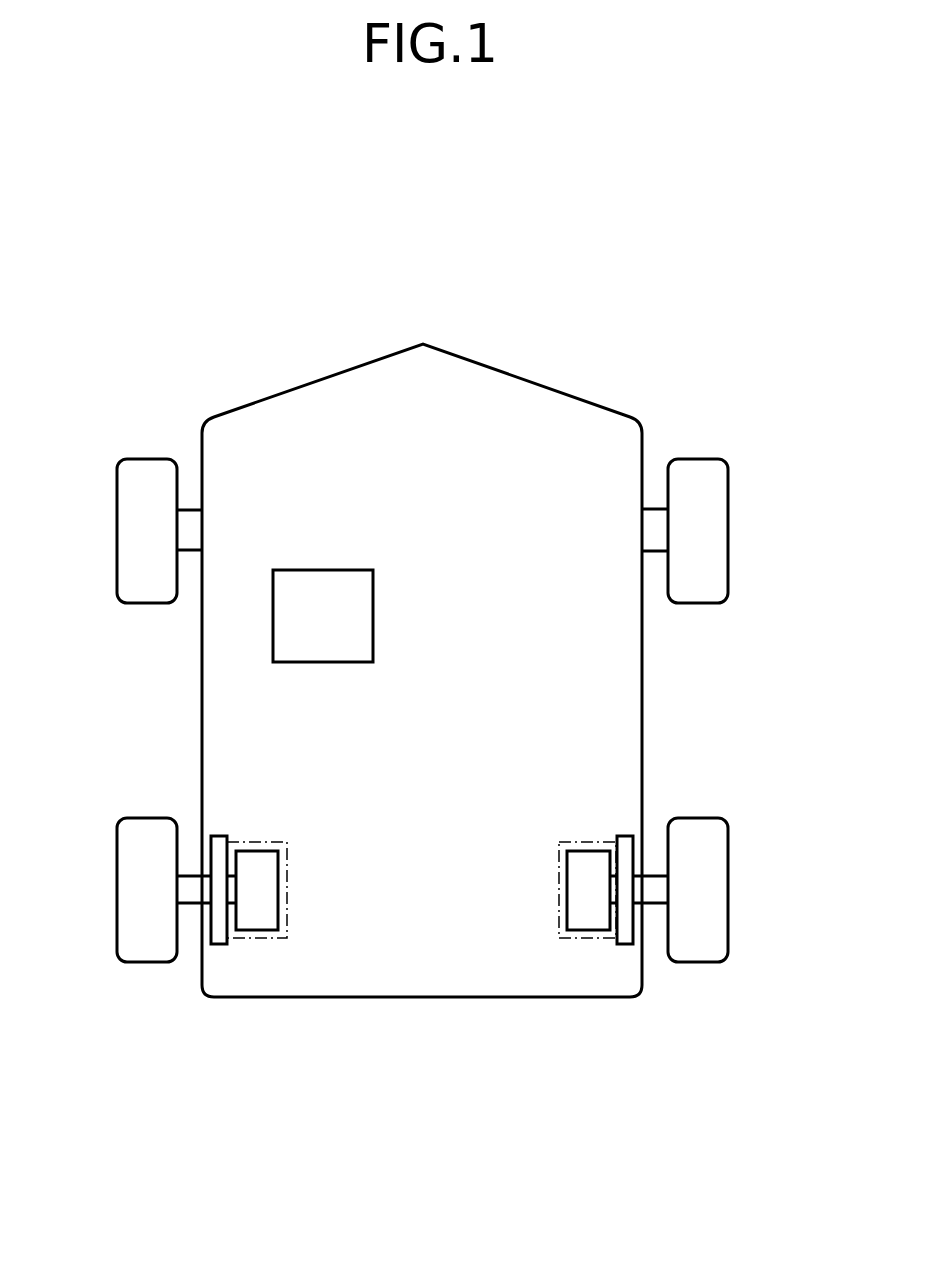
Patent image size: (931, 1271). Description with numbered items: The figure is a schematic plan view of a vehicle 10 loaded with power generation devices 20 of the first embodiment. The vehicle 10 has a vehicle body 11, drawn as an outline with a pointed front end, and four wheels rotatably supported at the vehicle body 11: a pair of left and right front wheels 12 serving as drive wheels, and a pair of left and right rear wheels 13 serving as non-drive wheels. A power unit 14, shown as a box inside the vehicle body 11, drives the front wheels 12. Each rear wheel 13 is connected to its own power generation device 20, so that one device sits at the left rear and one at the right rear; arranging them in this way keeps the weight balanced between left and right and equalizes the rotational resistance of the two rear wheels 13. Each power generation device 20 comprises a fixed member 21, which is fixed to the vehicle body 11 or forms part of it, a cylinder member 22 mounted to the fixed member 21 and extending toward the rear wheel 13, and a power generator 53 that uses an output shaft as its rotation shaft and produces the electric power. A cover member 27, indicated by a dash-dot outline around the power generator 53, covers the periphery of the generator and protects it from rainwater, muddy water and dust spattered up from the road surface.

The vehicle 10 is at (209, 337).
The vehicle body 11 is at (314, 382).
The front wheel 12 is at (138, 530).
The rear wheel 13 is at (138, 893).
The power unit 14 is at (285, 632).
The power generation device 20 is at (238, 962).
The fixed member 21 is at (218, 938).
The cylinder member 22 is at (193, 898).
The cover member 27 is at (248, 840).
The power generator 53 is at (272, 920).